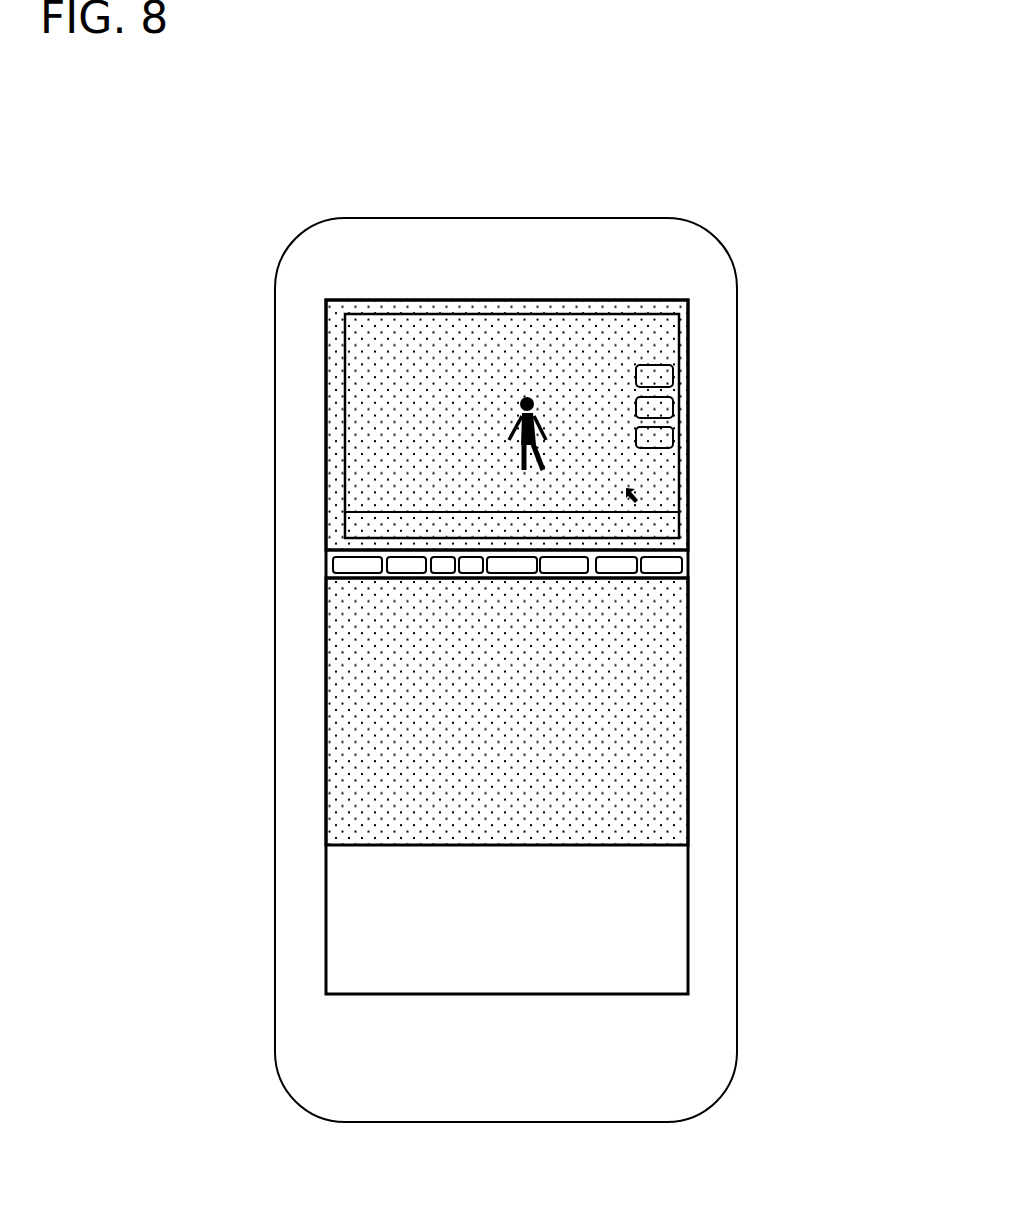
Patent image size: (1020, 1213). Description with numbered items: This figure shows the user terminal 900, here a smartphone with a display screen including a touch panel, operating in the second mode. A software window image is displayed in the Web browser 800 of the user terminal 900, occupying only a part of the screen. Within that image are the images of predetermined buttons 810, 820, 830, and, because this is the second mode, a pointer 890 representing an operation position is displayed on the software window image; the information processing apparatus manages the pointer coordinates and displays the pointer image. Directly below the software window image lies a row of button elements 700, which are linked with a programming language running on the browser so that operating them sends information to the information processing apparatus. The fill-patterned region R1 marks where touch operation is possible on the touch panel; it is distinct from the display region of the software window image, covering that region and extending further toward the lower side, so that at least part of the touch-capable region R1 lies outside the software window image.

The Web browser 800 is at (394, 300).
The user terminal 900 is at (620, 218).
The button 810 is at (665, 378).
The button 820 is at (665, 407).
The button 830 is at (665, 437).
The pointer 890 is at (638, 493).
The thumbnail/edit bar 700 is at (685, 563).
The region where touch operation is possible R1 is at (688, 830).